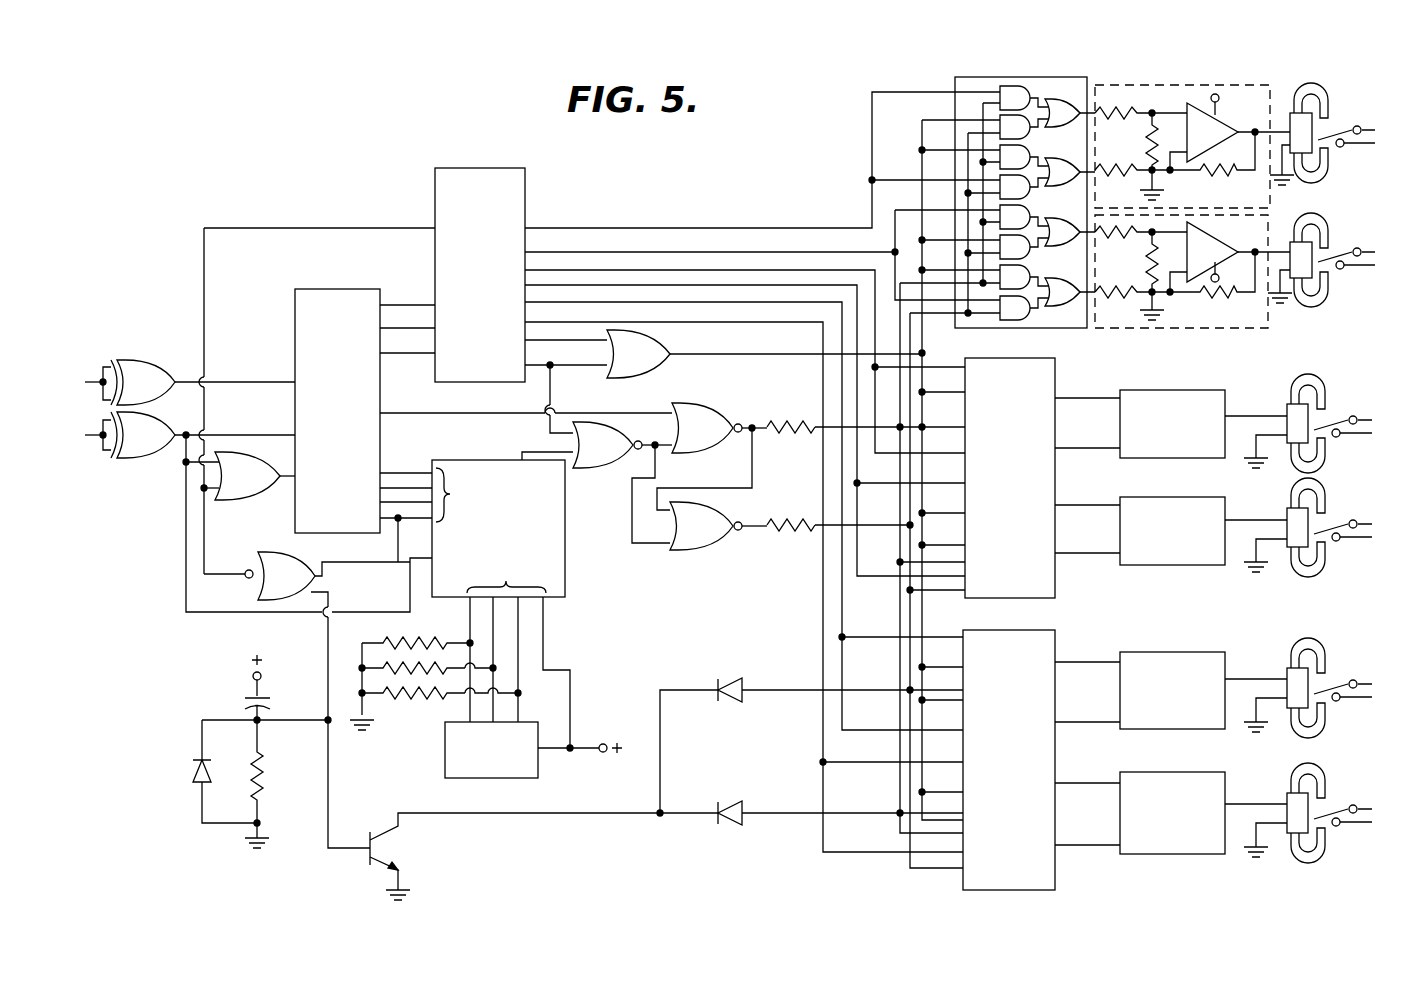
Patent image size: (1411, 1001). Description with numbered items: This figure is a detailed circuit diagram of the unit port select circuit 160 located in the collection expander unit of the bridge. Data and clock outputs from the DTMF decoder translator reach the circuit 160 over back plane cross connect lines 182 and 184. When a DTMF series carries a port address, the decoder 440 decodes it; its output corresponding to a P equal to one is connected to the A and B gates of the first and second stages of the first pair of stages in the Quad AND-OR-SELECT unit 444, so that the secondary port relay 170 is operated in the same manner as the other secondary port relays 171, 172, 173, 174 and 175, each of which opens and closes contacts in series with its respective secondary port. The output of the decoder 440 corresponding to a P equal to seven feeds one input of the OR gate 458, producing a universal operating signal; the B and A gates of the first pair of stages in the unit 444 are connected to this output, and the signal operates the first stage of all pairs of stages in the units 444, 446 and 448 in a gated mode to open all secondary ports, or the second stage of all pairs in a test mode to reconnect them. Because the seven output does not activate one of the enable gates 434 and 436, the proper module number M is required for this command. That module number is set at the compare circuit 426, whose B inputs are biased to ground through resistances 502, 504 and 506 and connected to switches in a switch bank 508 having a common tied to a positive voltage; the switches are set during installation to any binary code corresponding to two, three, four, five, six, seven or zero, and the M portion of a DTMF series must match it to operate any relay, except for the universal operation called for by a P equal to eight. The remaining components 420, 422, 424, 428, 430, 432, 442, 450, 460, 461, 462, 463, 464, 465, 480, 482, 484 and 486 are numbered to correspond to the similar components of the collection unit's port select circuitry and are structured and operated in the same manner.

The unit port select circuit 160 is at (165, 178).
The relay 170 is at (1335, 128).
The relay 171 is at (1334, 258).
The relay 172 is at (1330, 418).
The relay 173 is at (1332, 525).
The relay 174 is at (1330, 688).
The relay 175 is at (1332, 812).
The back plane cross connect line 182 is at (92, 378).
The back plane cross connect line 184 is at (95, 445).
The exclusive OR gate 420 is at (128, 362).
The exclusive OR gate 422 is at (150, 420).
The shift register 424 is at (295, 314).
The compare circuit 426 is at (565, 550).
The NOR gate 428 is at (256, 570).
The power supply circuit 430 is at (206, 695).
The NOR gate 432 is at (615, 460).
The enable gate 434 is at (722, 445).
The enable gate 436 is at (703, 551).
The decoder 440 is at (435, 181).
The resistor 442 is at (803, 436).
The Quad AND-OR-SELECT unit 444 is at (955, 80).
The unit 446 is at (978, 358).
The unit 448 is at (965, 630).
The resistor 450 is at (795, 536).
The OR gate 458 is at (660, 362).
The operational amplifier circuit 460 is at (1237, 85).
The operational amplifier circuit 461 is at (1218, 330).
The driver 462 is at (1128, 390).
The driver 463 is at (1165, 565).
The driver 464 is at (1152, 652).
The driver 465 is at (1160, 854).
The OR gate 480 is at (244, 488).
The transistor 482 is at (396, 846).
The diode 484 is at (735, 676).
The diode 486 is at (733, 800).
The resistance 502 is at (413, 636).
The resistance 504 is at (385, 655).
The resistance 506 is at (420, 700).
The switch bank 508 is at (445, 764).